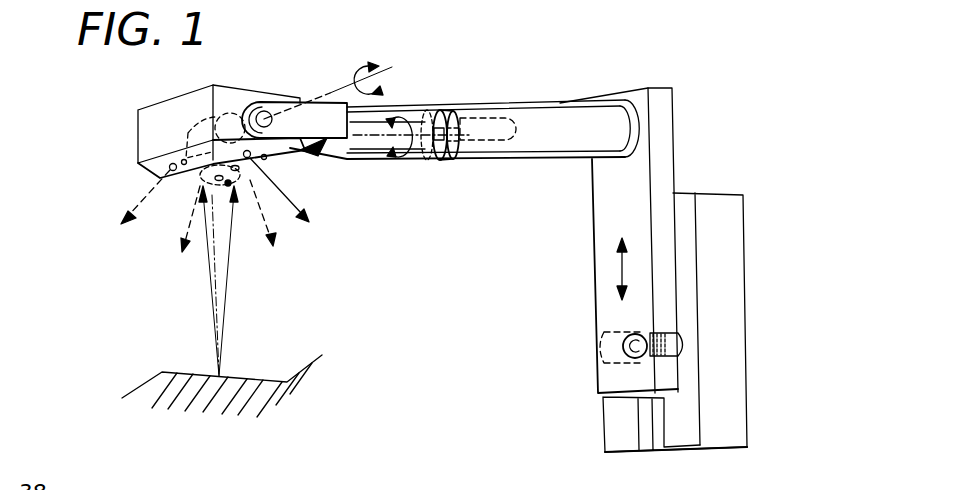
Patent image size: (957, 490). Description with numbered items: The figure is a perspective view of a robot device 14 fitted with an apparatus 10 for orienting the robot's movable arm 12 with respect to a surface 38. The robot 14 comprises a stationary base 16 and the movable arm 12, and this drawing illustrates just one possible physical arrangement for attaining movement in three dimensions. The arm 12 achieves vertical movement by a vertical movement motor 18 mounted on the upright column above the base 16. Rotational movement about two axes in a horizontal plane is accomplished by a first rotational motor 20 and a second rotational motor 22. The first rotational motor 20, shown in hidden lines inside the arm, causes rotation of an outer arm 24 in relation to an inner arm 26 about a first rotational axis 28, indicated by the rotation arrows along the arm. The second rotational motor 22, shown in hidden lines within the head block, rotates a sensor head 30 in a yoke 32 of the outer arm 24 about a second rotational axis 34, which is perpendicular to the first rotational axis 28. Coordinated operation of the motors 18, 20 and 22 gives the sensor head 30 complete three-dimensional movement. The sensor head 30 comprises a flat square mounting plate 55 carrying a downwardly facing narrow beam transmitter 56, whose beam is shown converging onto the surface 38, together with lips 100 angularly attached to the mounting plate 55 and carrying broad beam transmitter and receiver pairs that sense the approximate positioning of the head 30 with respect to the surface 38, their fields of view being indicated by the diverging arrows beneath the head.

The apparatus 10 is at (136, 85).
The movable arm 12 is at (527, 104).
The robot device 14 is at (708, 152).
The stationary base 16 is at (748, 432).
The vertical movement motor 18 is at (608, 363).
The first rotational motor 20 is at (482, 117).
The second rotational motor 22 is at (193, 128).
The outer arm 24 is at (380, 162).
The inner arm 26 is at (518, 160).
The first rotational axis 28 is at (373, 130).
The sensor head 30 is at (138, 148).
The yoke 32 is at (259, 99).
The second rotational axis 34 is at (326, 97).
The surface 38 is at (178, 372).
The mounting plate 55 is at (183, 186).
The narrow beam transmitter 56 is at (220, 196).
The lips 100 is at (167, 178).